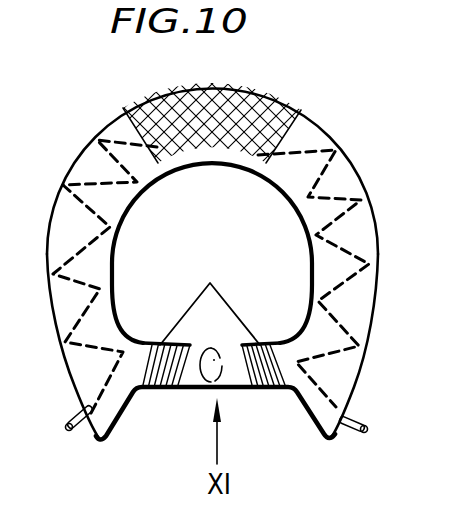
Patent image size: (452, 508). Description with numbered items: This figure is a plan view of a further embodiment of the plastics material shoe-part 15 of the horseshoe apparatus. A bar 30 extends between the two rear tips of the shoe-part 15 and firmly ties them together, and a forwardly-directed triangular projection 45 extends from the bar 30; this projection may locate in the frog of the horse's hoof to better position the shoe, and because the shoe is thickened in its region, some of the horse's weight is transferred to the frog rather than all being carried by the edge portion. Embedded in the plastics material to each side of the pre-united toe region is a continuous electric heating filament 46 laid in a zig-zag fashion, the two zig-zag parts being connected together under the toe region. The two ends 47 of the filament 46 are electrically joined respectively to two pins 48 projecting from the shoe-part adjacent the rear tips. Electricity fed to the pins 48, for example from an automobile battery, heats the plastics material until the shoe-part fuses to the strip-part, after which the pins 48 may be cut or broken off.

The shoe-part 15 is at (311, 144).
The bar 30 is at (247, 379).
The triangular projection 45 is at (225, 308).
The electric heating filament 46 is at (113, 265).
The ends of the filament 47 is at (85, 403).
The pins 48 is at (76, 434).